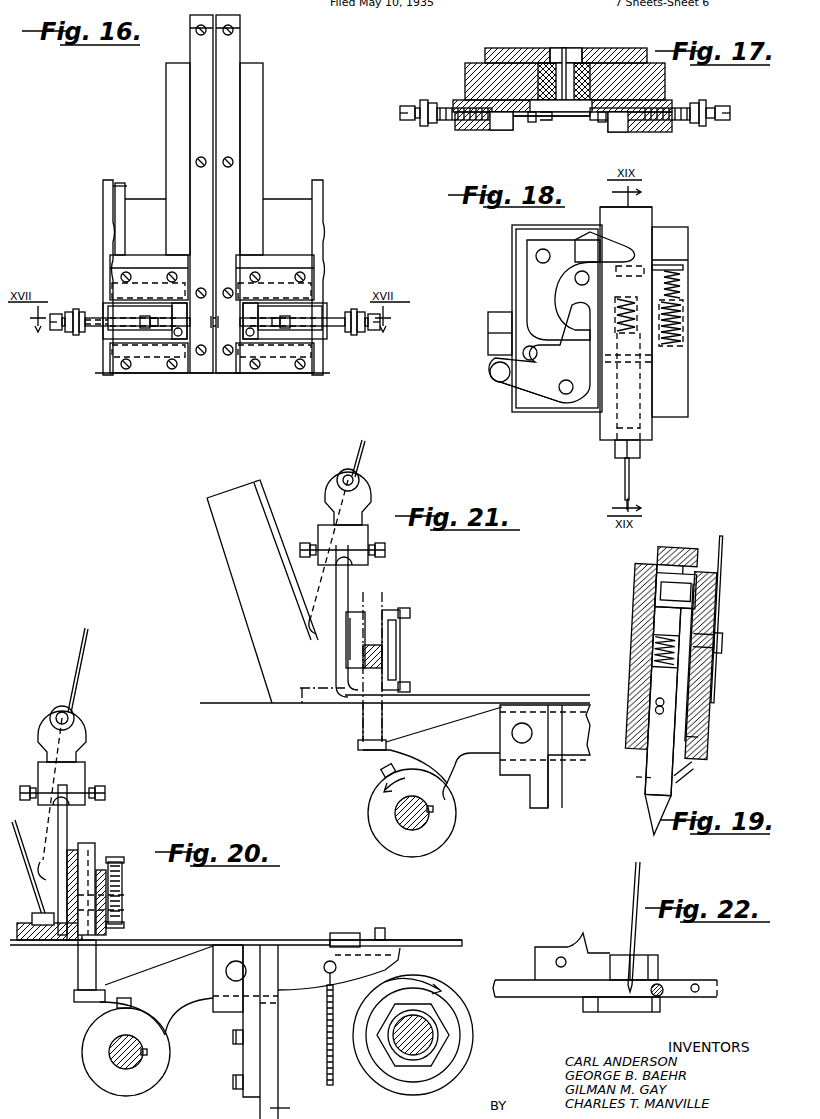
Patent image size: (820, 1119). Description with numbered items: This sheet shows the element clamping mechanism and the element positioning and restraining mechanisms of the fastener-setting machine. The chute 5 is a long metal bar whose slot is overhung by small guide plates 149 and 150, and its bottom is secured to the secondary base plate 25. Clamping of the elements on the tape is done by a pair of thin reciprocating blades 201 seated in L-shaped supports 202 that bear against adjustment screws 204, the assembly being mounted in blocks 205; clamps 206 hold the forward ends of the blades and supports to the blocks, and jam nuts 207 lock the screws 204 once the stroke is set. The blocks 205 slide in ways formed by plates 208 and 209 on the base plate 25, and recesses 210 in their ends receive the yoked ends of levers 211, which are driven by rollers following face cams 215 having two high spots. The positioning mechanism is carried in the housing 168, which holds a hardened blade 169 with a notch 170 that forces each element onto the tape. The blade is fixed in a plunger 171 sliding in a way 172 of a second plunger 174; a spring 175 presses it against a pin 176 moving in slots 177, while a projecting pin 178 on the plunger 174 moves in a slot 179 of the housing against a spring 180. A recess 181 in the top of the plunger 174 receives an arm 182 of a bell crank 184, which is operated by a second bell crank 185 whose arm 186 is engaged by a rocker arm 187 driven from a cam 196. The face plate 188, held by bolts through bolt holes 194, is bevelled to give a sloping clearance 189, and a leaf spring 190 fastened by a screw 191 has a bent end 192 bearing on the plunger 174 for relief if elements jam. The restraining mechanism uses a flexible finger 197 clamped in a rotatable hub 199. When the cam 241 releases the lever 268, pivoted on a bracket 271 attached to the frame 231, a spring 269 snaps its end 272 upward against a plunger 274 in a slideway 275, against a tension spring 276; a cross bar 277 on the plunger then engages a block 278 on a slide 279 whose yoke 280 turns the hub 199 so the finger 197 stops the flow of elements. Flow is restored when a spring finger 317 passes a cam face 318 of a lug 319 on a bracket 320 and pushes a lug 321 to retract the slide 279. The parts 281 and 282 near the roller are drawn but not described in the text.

In FIG. 16, the chute 5 is at (241, 30).
In FIG. 17, the chute 5 is at (584, 68).
In FIG. 20, the chute 5 is at (30, 852).
In FIG. 21, the chute 5 is at (260, 484).
In FIG. 16, the secondary base plate 25 is at (262, 142).
In FIG. 17, the secondary base plate 25 is at (525, 62).
In FIG. 16, the guide plate 149 is at (232, 97).
In FIG. 16, the guide plate 150 is at (197, 92).
In FIG. 18, the housing 168 is at (690, 364).
In FIG. 19, the housing 168 is at (632, 608).
In FIG. 18, the blade 169 is at (630, 475).
In FIG. 19, the notch 170 is at (650, 838).
In FIG. 18, the plunger 171 is at (640, 451).
In FIG. 18, the way 172 is at (643, 428).
In FIG. 18, the second plunger 174 is at (650, 402).
In FIG. 19, the second plunger 174 is at (678, 788).
In FIG. 18, the spring 175 is at (622, 304).
In FIG. 19, the spring 175 is at (650, 655).
In FIG. 18, the pin 176 is at (640, 365).
In FIG. 18, the slots 177 is at (645, 357).
In FIG. 18, the laterally projecting pin 178 is at (684, 268).
In FIG. 18, the slot 179 is at (690, 279).
In FIG. 18, the spring 180 is at (688, 291).
In FIG. 18, the recess 181 is at (632, 250).
In FIG. 18, the arm 182 is at (605, 247).
In FIG. 18, the bell crank 184 is at (530, 270).
In FIG. 18, the second bell crank 185 is at (507, 386).
In FIG. 18, the arm 186 is at (489, 375).
In FIG. 18, the rocker arm 187 is at (490, 340).
In FIG. 19, the face plate 188 is at (714, 598).
In FIG. 19, the sloping clearance 189 is at (700, 733).
In FIG. 19, the leaf spring 190 is at (711, 670).
In FIG. 19, the screw 191 is at (722, 640).
In FIG. 19, the bent end 192 is at (700, 768).
In FIG. 18, the bolt holes 194 is at (532, 354).
In FIG. 16, the cam 196 is at (122, 183).
In FIG. 20, the flexible finger 197 is at (52, 804).
In FIG. 21, the flexible finger 197 is at (305, 600).
In FIG. 20, the hub 199 is at (72, 712).
In FIG. 21, the hub 199 is at (352, 472).
In FIG. 17, the blades 201 is at (560, 116).
In FIG. 17, the L-shaped supports 202 is at (632, 132).
In FIG. 16, the adjustment screws 204 is at (360, 336).
In FIG. 17, the adjustment screws 204 is at (735, 113).
In FIG. 17, the blocks 205 is at (665, 100).
In FIG. 17, the clamps 206 is at (533, 122).
In FIG. 16, the jam nuts 207 is at (351, 315).
In FIG. 17, the jam nuts 207 is at (705, 107).
In FIG. 16, the plate 208 is at (148, 292).
In FIG. 16, the plate 209 is at (138, 374).
In FIG. 16, the recesses 210 is at (92, 332).
In FIG. 17, the recesses 210 is at (445, 100).
In FIG. 16, the levers 211 is at (96, 310).
In FIG. 16, the face cams 215 is at (103, 232).
In FIG. 20, the frame 231 is at (298, 1106).
In FIG. 20, the cam 241 is at (472, 1050).
In FIG. 20, the lever 268 is at (400, 960).
In FIG. 21, the lever 268 is at (578, 760).
In FIG. 20, the spring 269 is at (327, 1034).
In FIG. 20, the bracket 271 is at (252, 952).
In FIG. 20, the lever end 272 is at (76, 1002).
In FIG. 21, the lever end 272 is at (368, 750).
In FIG. 20, the plunger 274 is at (80, 975).
In FIG. 21, the plunger 274 is at (363, 727).
In FIG. 20, the slideway 275 is at (124, 885).
In FIG. 20, the tension spring 276 is at (108, 904).
In FIG. 21, the tension spring 276 is at (405, 632).
In FIG. 20, the cross bar 277 is at (126, 916).
In FIG. 21, the cross bar 277 is at (385, 652).
In FIG. 20, the block 278 is at (82, 852).
In FIG. 21, the block 278 is at (345, 645).
In FIG. 20, the slide 279 is at (226, 938).
In FIG. 21, the slide 279 is at (535, 703).
In FIG. 22, the slide 279 is at (543, 990).
In FIG. 20, the yoke 280 is at (85, 775).
In FIG. 21, the yoke 280 is at (320, 538).
In FIG. 20, the roller 281 is at (140, 1008).
In FIG. 21, the roller 281 is at (436, 766).
In FIG. 20, the stop 282 is at (128, 998).
In FIG. 21, the stop 282 is at (383, 776).
In FIG. 22, the spring finger 317 is at (634, 886).
In FIG. 22, the cam face 318 is at (645, 962).
In FIG. 22, the lug 319 is at (660, 970).
In FIG. 22, the bracket 320 is at (586, 952).
In FIG. 22, the lug 321 is at (686, 997).